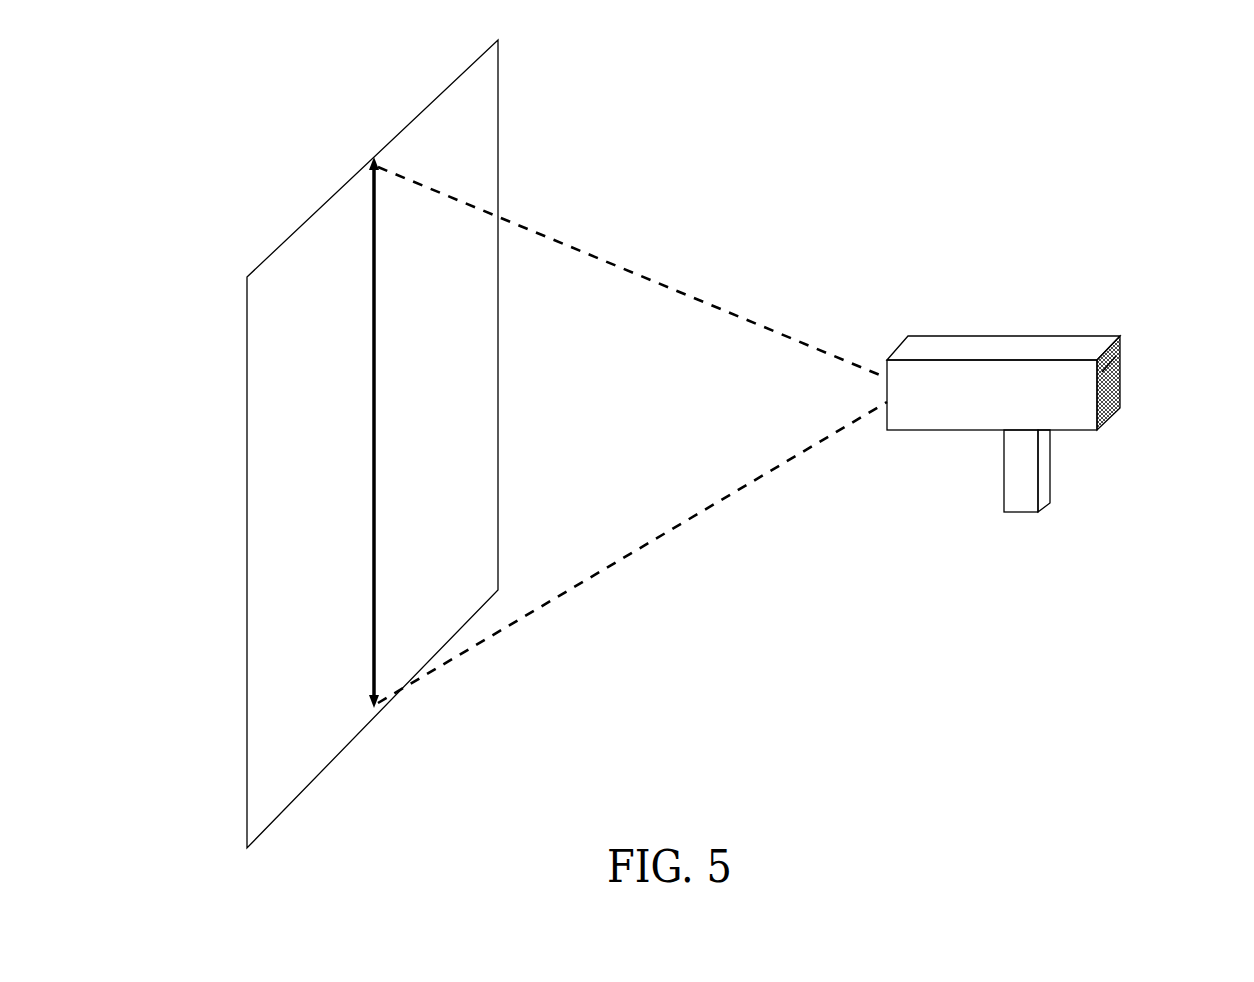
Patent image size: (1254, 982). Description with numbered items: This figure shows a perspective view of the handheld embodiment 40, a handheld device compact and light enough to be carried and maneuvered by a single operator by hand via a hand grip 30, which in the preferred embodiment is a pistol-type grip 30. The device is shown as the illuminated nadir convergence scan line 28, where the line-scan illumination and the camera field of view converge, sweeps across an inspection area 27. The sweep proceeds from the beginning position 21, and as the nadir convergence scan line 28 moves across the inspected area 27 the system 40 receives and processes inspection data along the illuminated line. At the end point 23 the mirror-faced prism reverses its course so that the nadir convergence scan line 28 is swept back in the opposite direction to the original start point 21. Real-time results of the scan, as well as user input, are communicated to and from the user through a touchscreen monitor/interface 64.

The beginning position 21 is at (512, 238).
The end point 23 is at (247, 396).
The inspection area 27 is at (322, 452).
The nadir convergence scan line 28 is at (370, 318).
The hand grip 30 is at (1038, 473).
The handheld embodiment 40 is at (1062, 360).
The touchscreen monitor/interface 64 is at (1113, 410).